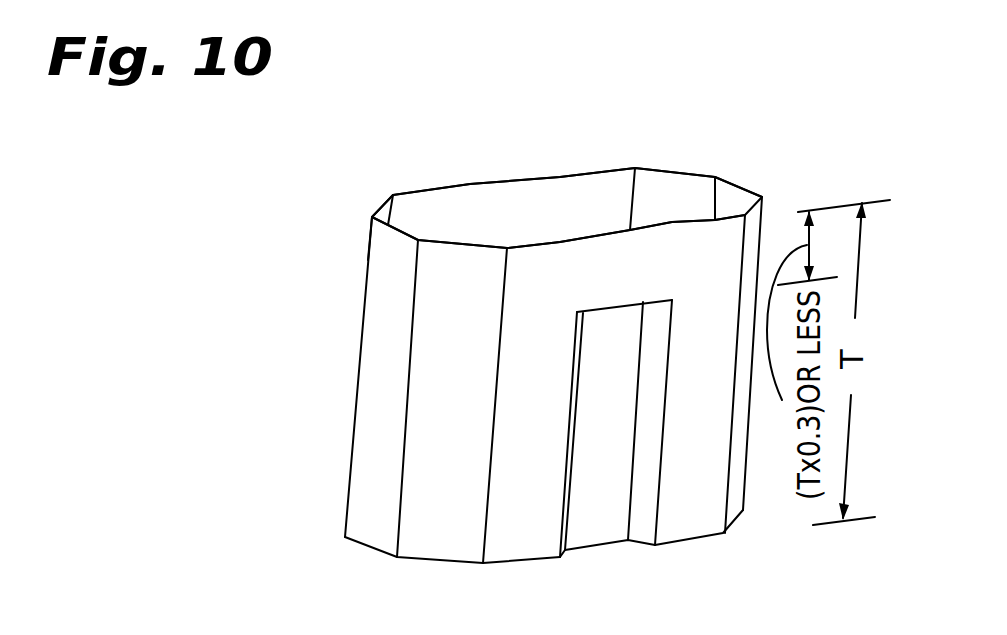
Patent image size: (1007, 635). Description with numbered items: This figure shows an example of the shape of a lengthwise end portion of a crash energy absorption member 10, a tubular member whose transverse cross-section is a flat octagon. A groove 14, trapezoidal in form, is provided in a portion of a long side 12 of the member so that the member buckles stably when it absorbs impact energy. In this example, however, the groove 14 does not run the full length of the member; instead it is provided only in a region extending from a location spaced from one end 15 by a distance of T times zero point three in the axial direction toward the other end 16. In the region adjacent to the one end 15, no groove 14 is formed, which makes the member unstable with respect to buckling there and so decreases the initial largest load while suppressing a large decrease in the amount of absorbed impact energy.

The crash energy absorption member 10 is at (779, 180).
The long side 12 is at (560, 177).
The groove 14 is at (600, 480).
The one end 15 is at (372, 211).
The other end 16 is at (345, 537).